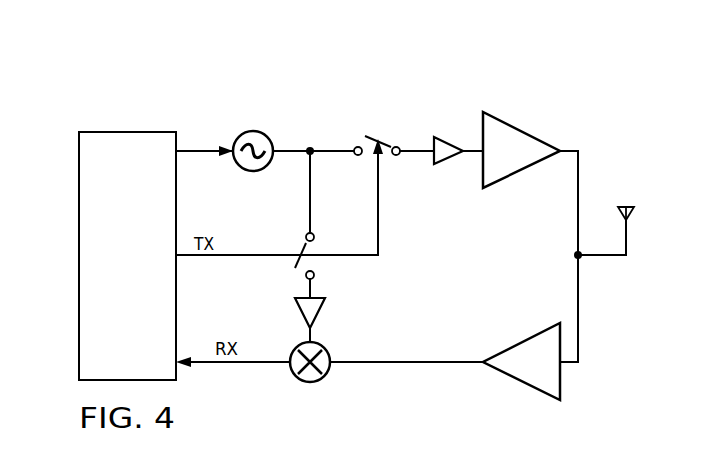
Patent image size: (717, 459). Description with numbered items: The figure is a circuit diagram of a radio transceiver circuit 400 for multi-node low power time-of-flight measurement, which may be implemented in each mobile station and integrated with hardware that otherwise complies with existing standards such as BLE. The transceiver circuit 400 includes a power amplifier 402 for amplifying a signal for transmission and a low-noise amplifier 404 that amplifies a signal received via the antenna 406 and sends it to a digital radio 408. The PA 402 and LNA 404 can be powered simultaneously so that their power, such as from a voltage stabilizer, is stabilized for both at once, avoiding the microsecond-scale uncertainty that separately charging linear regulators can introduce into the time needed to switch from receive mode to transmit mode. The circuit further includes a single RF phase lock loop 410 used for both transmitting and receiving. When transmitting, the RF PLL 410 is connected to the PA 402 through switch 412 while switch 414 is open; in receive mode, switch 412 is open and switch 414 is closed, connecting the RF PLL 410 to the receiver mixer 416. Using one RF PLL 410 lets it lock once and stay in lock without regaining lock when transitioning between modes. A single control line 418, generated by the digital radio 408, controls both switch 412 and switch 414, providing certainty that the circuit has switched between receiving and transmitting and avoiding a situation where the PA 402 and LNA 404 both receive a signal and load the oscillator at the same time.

The radio transceiver circuit 400 is at (340, 87).
The power amplifier (PA) 402 is at (524, 128).
The low-noise amplifier (LNA) 404 is at (518, 384).
The antenna 406 is at (626, 206).
The digital radio 408 is at (146, 312).
The RF phase lock loop (PLL) 410 is at (240, 137).
The switch 412 is at (386, 145).
The switch 414 is at (305, 240).
The receiver mixer 416 is at (318, 380).
The control line 418 is at (233, 257).